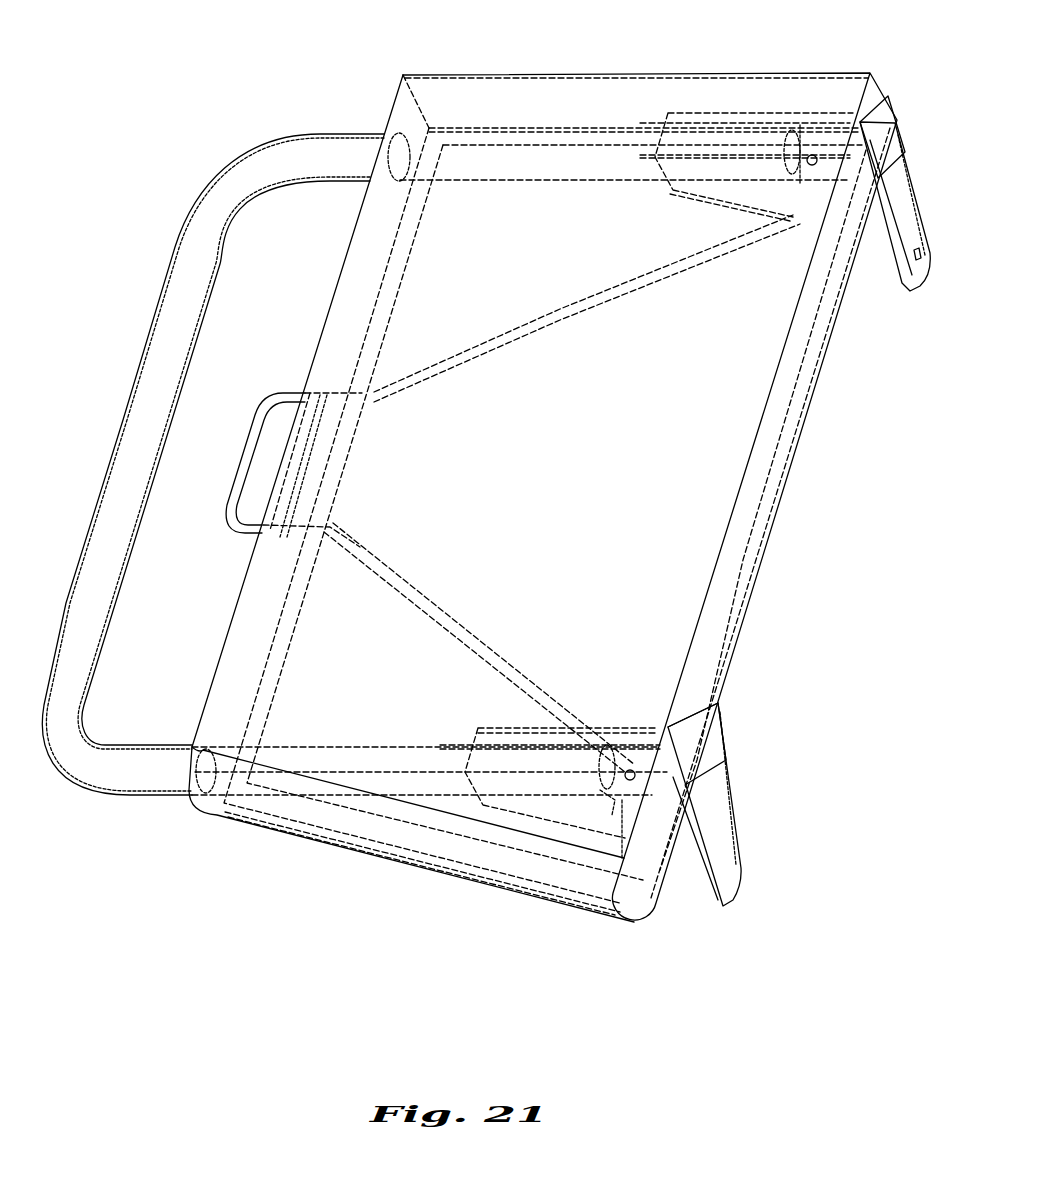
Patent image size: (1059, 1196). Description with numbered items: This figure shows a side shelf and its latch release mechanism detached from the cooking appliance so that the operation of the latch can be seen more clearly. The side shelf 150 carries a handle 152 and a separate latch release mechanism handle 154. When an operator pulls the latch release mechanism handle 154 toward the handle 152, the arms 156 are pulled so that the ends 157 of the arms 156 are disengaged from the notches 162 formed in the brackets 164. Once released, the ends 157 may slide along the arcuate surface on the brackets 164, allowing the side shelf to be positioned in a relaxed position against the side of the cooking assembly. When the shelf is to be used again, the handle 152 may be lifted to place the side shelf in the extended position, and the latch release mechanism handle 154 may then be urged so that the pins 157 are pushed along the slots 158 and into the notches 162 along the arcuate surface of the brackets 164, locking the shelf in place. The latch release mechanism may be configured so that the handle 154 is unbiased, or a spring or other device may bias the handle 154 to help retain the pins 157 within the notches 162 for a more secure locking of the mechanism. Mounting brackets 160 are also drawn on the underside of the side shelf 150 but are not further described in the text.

The side shelf 150 is at (752, 598).
The handle 152 is at (112, 793).
The latch release mechanism handle 154 is at (232, 530).
The arms 156 is at (466, 363).
The ends (pins) of arms 157 is at (805, 135).
The slots 158 is at (613, 800).
The mounting bracket 160 is at (703, 188).
The notches 162 is at (862, 168).
The brackets 164 is at (908, 292).